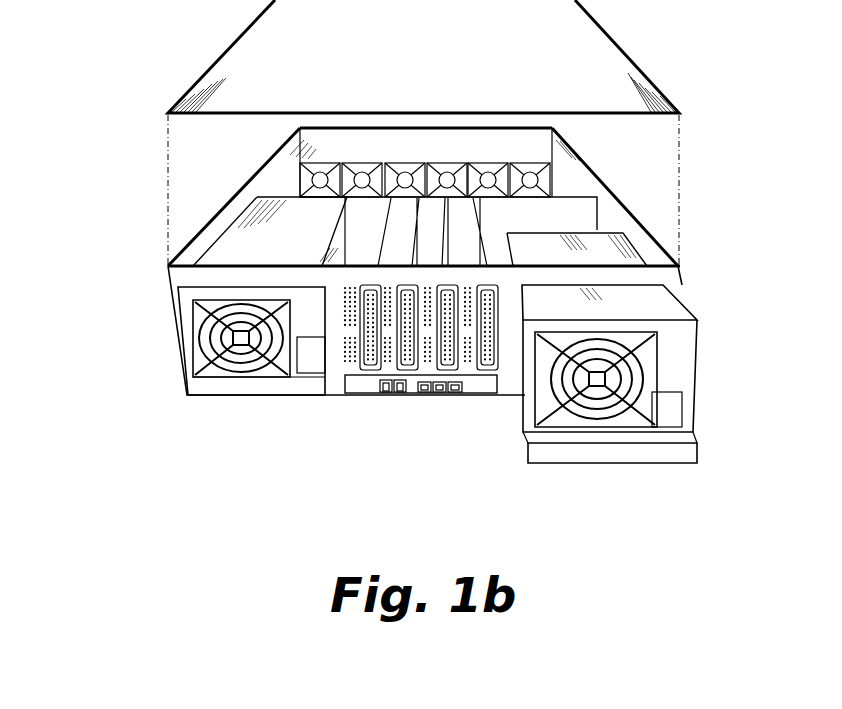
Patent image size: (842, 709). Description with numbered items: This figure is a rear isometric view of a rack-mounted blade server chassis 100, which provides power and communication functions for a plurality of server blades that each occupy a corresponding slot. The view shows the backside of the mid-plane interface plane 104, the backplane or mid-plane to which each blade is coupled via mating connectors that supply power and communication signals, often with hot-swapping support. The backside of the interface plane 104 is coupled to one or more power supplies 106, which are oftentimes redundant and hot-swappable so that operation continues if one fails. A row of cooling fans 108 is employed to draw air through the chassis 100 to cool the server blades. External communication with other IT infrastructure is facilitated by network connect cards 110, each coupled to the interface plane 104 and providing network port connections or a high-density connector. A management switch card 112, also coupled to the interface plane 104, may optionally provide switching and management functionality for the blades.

The chassis 100 is at (210, 447).
The interface plane 104 is at (597, 222).
The power supply 106 is at (195, 355).
The cooling fan 108 is at (300, 193).
The network connect card 110 is at (365, 360).
The management switch card 112 is at (463, 393).